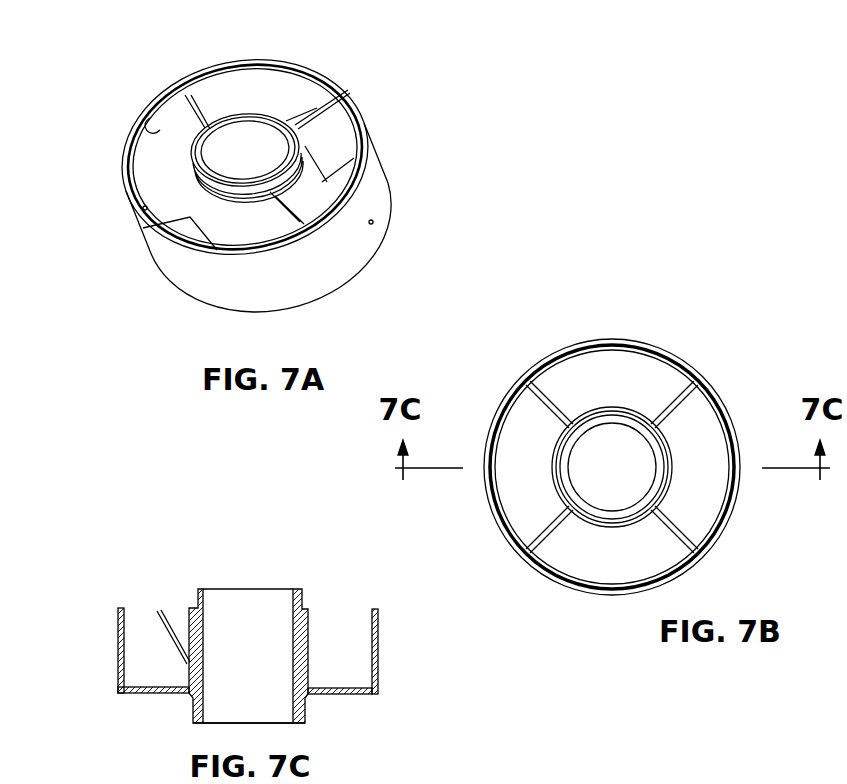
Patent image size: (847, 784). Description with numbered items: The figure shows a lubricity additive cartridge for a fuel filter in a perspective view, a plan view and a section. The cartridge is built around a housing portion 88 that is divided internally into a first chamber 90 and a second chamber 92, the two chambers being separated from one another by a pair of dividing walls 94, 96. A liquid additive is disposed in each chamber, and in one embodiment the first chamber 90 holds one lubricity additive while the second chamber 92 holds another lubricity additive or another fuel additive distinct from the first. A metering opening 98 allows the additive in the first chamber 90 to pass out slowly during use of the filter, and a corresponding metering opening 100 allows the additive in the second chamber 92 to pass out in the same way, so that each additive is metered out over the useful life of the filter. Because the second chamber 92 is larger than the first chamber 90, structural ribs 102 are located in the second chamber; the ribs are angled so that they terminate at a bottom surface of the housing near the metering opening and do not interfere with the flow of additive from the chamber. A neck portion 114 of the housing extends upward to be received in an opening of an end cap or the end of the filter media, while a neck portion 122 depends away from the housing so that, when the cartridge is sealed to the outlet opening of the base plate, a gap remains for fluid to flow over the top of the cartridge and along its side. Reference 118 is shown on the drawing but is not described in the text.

In FIG. 7A, the housing portion 88 is at (130, 147).
In FIG. 7B, the housing portion 88 is at (612, 467).
In FIG. 7A, the first chamber 90 is at (370, 125).
In FIG. 7B, the first chamber 90 is at (732, 492).
In FIG. 7A, the second chamber 92 is at (150, 118).
In FIG. 7B, the second chamber 92 is at (600, 577).
In FIG. 7A, the dividing wall 94 is at (328, 123).
In FIG. 7B, the dividing wall 94 is at (690, 418).
In FIG. 7A, the dividing wall 96 is at (286, 217).
In FIG. 7B, the dividing wall 96 is at (697, 531).
In FIG. 7A, the metering opening 98 is at (372, 224).
In FIG. 7C, the metering opening 98 is at (375, 684).
In FIG. 7A, the metering opening 100 is at (145, 206).
In FIG. 7C, the metering opening 100 is at (121, 684).
In FIG. 7A, the structural ribs 102 is at (205, 113).
In FIG. 7B, the structural ribs 102 is at (552, 400).
In FIG. 7C, the structural ribs 102 is at (158, 611).
In FIG. 7A, the neck portion 114 is at (250, 110).
In FIG. 7B, the neck portion 114 is at (612, 467).
In FIG. 7C, the neck portion 114 is at (302, 594).
In FIG. 7A, the hub bore 118 is at (305, 148).
In FIG. 7B, the hub bore 118 is at (627, 417).
In FIG. 7C, the neck portion 122 is at (307, 707).